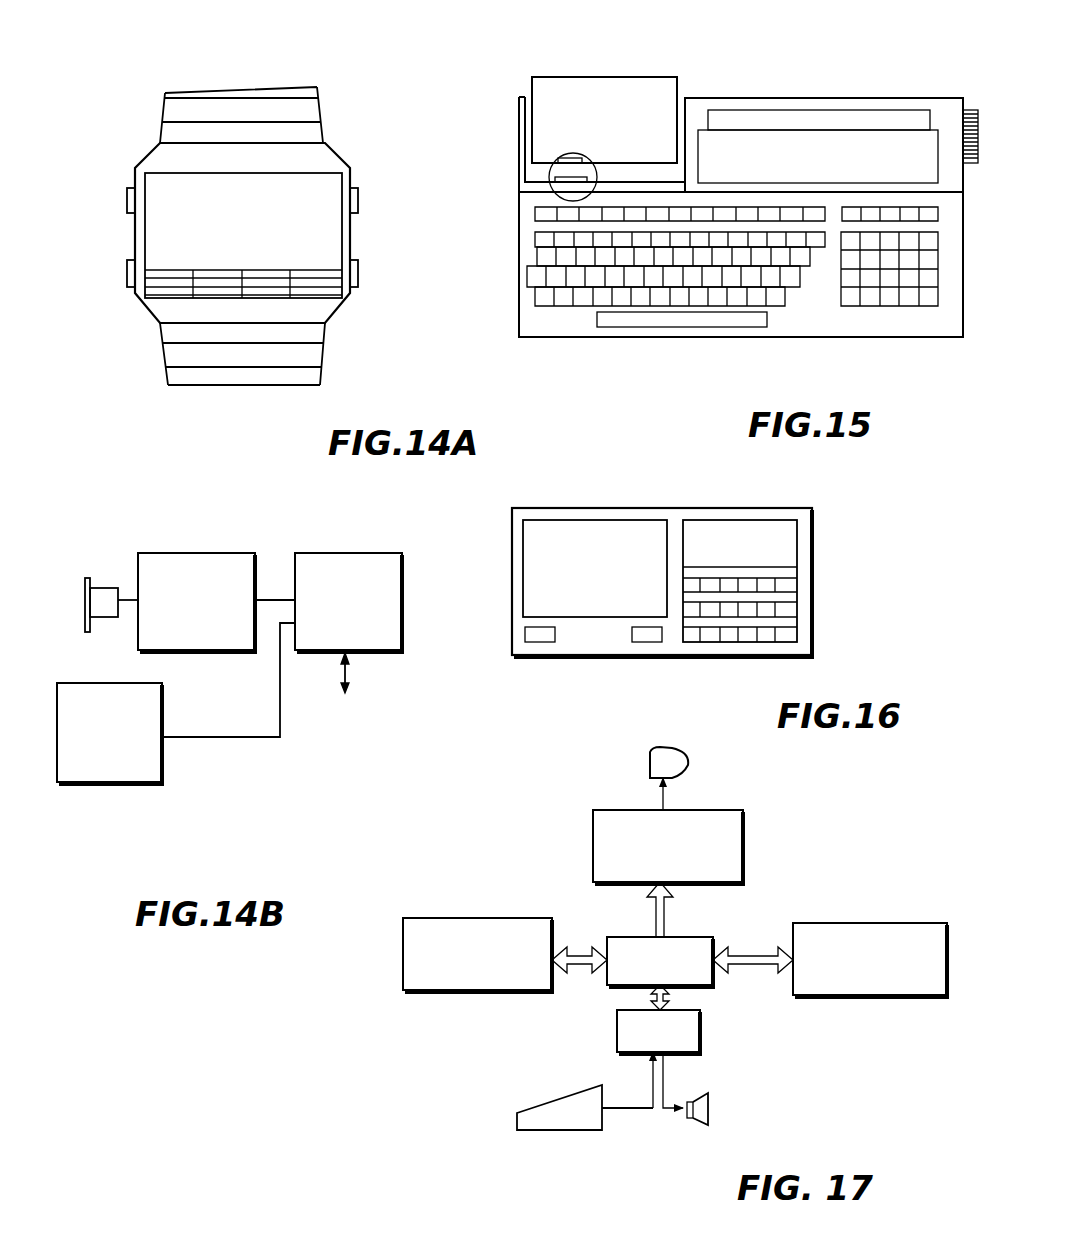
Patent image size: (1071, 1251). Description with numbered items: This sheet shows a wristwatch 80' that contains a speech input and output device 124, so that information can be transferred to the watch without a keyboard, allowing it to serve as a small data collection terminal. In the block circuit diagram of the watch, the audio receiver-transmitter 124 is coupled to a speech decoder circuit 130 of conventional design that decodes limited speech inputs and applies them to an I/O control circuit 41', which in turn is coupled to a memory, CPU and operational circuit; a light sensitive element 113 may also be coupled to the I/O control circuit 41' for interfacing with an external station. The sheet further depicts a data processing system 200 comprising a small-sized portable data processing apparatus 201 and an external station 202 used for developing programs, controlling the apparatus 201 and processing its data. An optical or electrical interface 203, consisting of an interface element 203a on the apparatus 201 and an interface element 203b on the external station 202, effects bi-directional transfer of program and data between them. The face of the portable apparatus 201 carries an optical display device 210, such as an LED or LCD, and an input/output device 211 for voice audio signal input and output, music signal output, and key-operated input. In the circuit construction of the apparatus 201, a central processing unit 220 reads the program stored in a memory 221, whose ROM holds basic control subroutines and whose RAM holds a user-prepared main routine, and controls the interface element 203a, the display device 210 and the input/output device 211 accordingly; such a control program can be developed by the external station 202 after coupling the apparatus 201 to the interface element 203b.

In FIG. 14A, the wristwatch 80' is at (252, 236).
In FIG. 14A, the speech input and output device 124 is at (330, 290).
In FIG. 14B, the speech input and output device 124 is at (110, 592).
In FIG. 15, the data processing system 200 is at (750, 30).
In FIG. 15, the portable data processing apparatus 201 is at (620, 80).
In FIG. 16, the portable data processing apparatus 201 is at (508, 540).
In FIG. 15, the external station 202 is at (832, 80).
In FIG. 15, the interface 203 is at (548, 173).
In FIG. 15, the interface element 203a is at (575, 157).
In FIG. 17, the interface element 203a is at (522, 897).
In FIG. 15, the interface element 203b is at (560, 180).
In FIG. 14B, the speech decoder circuit 130 is at (243, 538).
In FIG. 14B, the I/O control circuit 41' is at (374, 623).
In FIG. 14B, the light sensitive element 113 is at (162, 782).
In FIG. 16, the optical display device 210 is at (602, 532).
In FIG. 17, the optical display device 210 is at (607, 813).
In FIG. 16, the input/output device 211 is at (797, 547).
In FIG. 17, the input/output device 211 is at (700, 1033).
In FIG. 17, the central processing unit 220 is at (692, 935).
In FIG. 17, the memory 221 is at (912, 905).